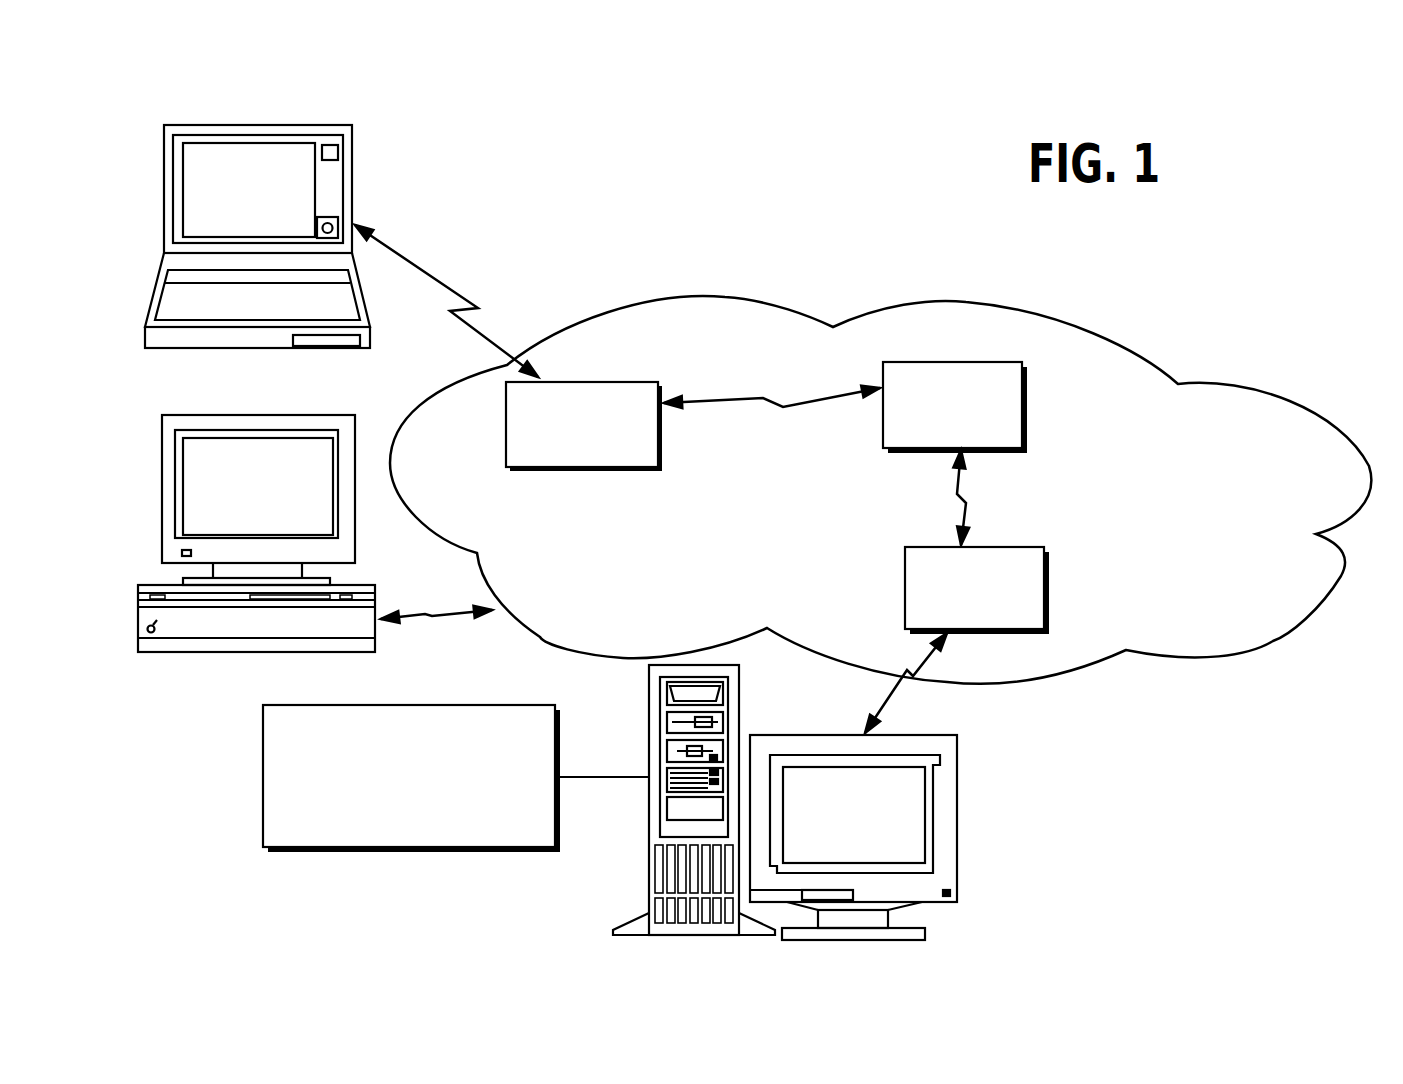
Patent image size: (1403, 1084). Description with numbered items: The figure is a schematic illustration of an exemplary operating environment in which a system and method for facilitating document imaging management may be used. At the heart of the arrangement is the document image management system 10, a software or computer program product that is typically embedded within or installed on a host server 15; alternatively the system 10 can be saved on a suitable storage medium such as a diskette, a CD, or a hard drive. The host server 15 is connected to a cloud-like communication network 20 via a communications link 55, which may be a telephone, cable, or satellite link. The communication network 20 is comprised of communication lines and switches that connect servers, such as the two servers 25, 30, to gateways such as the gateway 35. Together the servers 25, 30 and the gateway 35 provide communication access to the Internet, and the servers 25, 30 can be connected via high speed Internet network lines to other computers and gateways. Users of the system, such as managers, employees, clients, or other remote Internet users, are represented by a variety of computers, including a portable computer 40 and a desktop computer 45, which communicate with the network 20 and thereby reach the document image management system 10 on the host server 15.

The document image management system 10 is at (263, 748).
The host server 15 is at (649, 716).
The communication network 20 is at (725, 297).
The server 25 is at (950, 547).
The server 30 is at (975, 362).
The gateway 35 is at (580, 470).
The computer 40 is at (272, 122).
The computer 45 is at (313, 413).
The communications link 55 is at (880, 717).